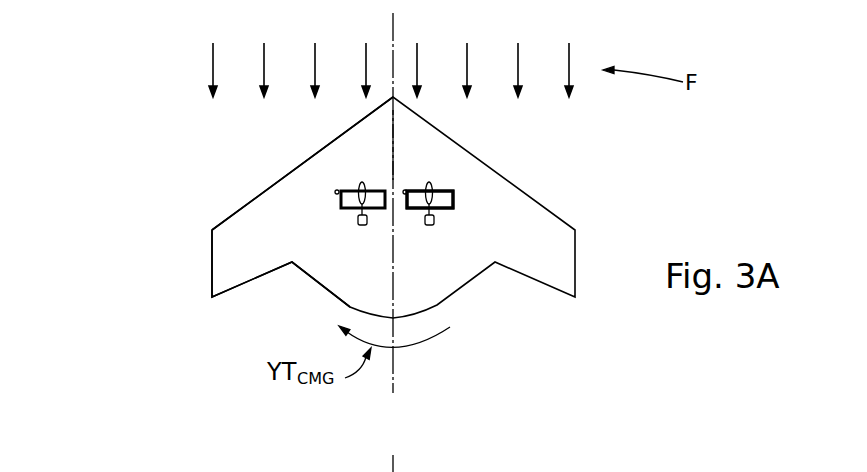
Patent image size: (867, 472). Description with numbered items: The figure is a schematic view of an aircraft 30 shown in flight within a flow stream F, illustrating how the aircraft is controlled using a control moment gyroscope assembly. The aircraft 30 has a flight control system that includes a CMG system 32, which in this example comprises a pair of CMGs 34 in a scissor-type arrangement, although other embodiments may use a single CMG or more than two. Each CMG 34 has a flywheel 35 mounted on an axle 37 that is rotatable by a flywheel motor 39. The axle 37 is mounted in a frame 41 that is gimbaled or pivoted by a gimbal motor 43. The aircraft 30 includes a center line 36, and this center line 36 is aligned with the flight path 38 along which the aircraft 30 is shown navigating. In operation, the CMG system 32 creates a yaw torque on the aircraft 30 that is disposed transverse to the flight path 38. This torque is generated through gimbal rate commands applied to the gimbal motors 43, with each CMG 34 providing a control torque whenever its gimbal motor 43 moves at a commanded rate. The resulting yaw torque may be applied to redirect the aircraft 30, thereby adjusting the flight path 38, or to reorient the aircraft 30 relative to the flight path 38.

The aircraft 30 is at (575, 192).
The CMG system 32 is at (307, 196).
The CMG 34 is at (413, 209).
The flywheel 35 is at (433, 184).
The center line 36 is at (394, 145).
The axle 37 is at (377, 190).
The flight path 38 is at (394, 29).
The flywheel motor 39 is at (337, 190).
The frame 41 is at (455, 198).
The gimbal motor 43 is at (436, 219).